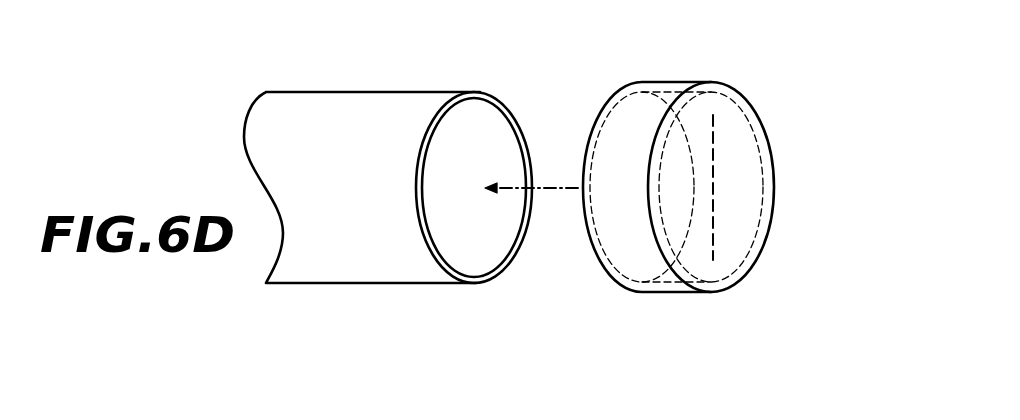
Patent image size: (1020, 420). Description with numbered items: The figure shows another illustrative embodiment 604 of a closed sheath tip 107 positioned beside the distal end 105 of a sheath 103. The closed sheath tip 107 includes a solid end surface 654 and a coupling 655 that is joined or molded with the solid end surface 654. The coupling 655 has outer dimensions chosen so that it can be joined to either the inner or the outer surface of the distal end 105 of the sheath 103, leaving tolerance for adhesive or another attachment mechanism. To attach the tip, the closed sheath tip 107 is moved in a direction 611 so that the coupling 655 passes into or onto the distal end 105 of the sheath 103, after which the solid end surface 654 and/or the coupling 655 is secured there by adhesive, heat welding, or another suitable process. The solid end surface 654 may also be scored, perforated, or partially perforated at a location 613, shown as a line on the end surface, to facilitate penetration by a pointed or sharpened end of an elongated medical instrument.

The sheath 103 is at (305, 92).
The closed sheath tip 107 is at (437, 92).
The distal end of the sheath 105 is at (478, 284).
The direction 611 is at (542, 190).
The illustrative embodiment 604 is at (767, 93).
The coupling 655 is at (683, 82).
The solid end surface 654 is at (722, 247).
The location 613 is at (713, 188).